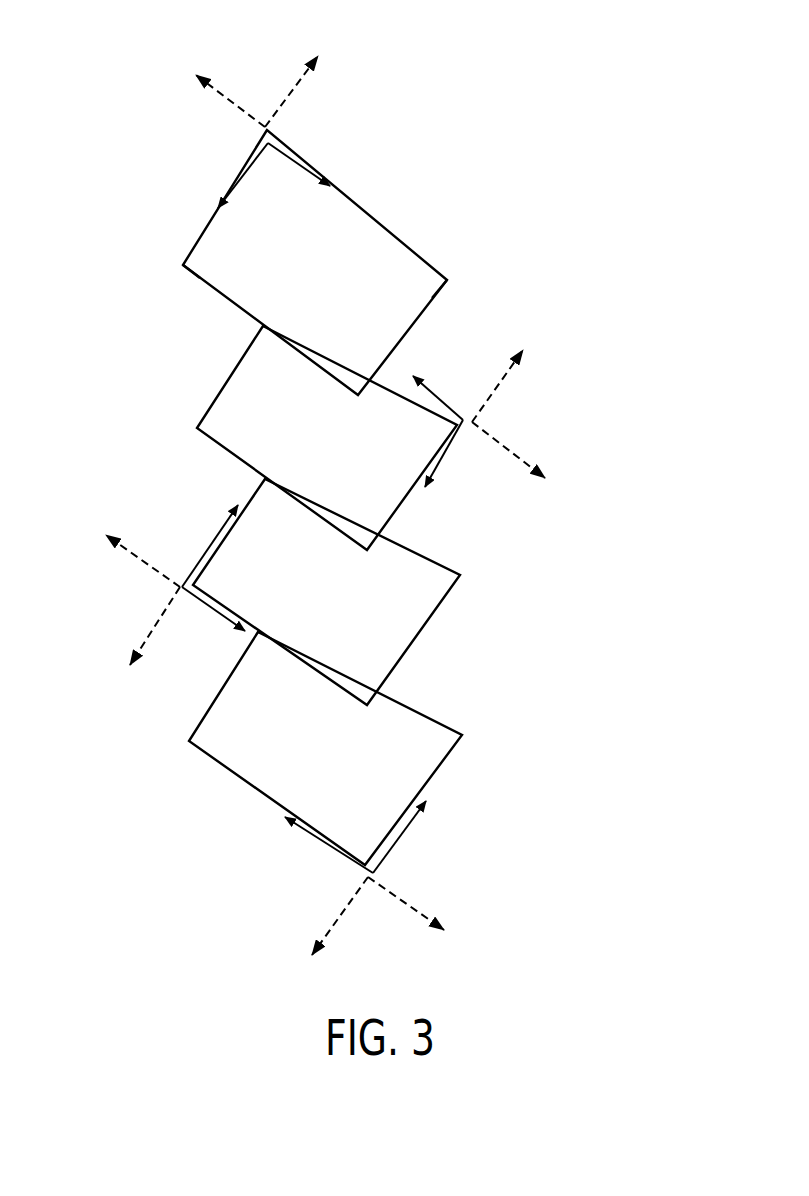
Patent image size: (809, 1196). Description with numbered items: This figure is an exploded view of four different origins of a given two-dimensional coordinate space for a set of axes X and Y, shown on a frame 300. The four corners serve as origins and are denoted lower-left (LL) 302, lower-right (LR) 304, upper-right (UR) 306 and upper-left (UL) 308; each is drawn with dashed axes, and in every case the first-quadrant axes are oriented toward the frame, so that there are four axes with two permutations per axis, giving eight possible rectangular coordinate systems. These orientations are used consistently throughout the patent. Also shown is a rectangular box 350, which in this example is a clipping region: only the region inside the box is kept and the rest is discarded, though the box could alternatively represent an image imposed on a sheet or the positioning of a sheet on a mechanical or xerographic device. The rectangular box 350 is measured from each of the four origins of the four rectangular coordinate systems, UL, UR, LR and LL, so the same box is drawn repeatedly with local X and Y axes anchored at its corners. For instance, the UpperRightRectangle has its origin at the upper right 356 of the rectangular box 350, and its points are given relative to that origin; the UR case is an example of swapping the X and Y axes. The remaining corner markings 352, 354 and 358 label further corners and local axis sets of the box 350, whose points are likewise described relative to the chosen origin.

The frame 300 is at (92, 76).
The lower-left (LL) corner 302 is at (112, 593).
The lower-right (LR) corner 304 is at (367, 943).
The upper-right (UR) corner 306 is at (538, 418).
The upper-left (UL) corner 308 is at (257, 62).
The rectangular box 350 is at (383, 232).
The left corner of sub-image 352 is at (183, 264).
The local coordinate axes at right corner of sub-image 354 is at (393, 372).
The upper right of rectangle 356 is at (448, 280).
The local coordinate axes at top corner of sub-image 358 is at (274, 143).